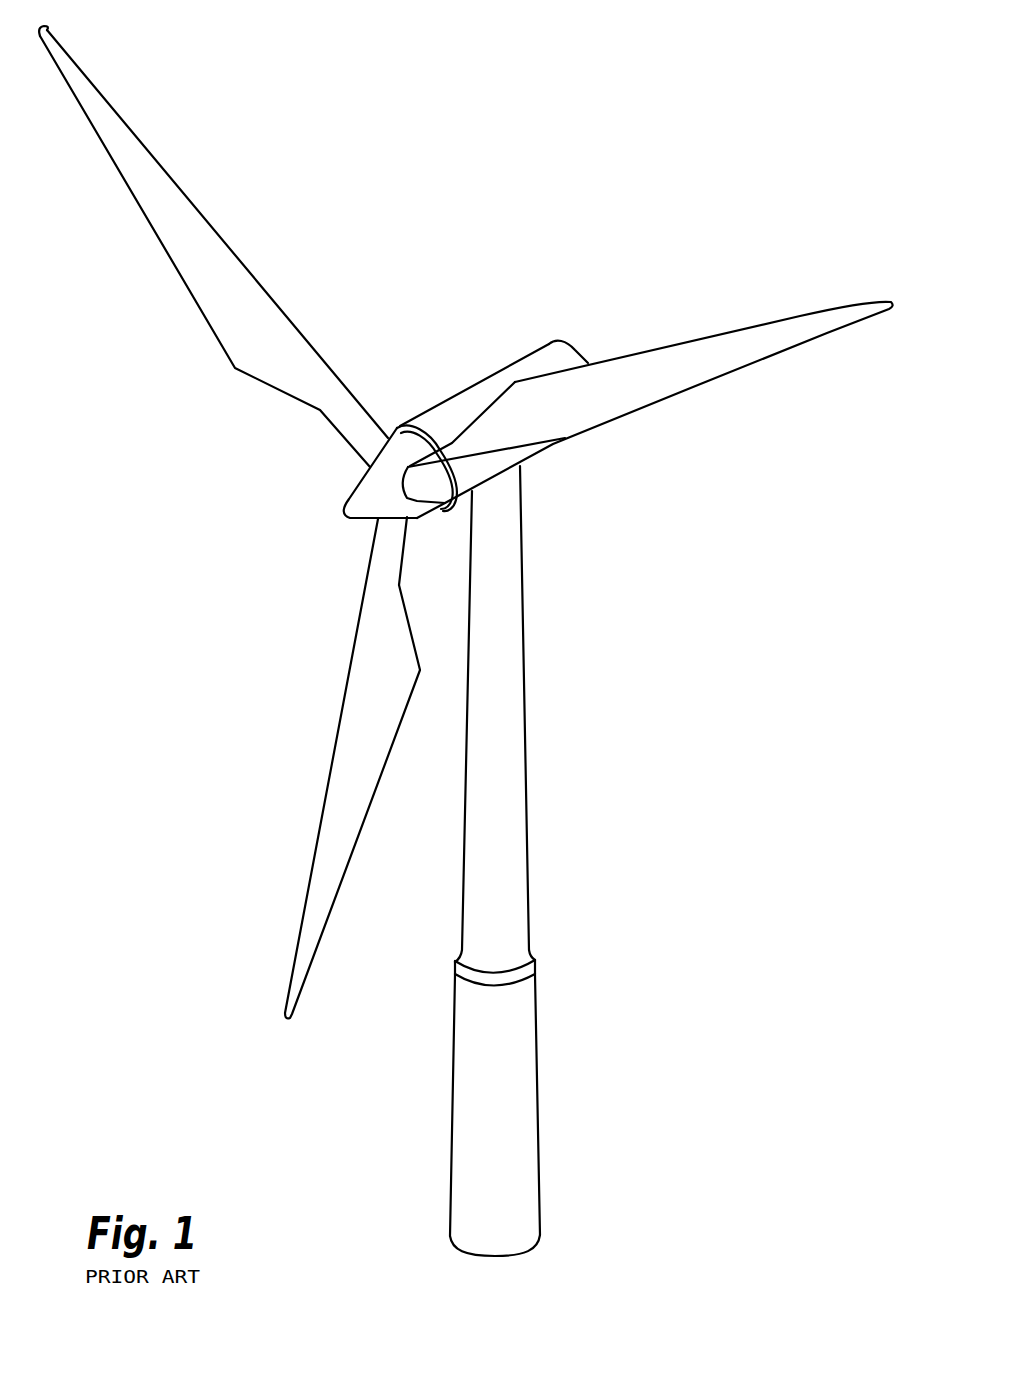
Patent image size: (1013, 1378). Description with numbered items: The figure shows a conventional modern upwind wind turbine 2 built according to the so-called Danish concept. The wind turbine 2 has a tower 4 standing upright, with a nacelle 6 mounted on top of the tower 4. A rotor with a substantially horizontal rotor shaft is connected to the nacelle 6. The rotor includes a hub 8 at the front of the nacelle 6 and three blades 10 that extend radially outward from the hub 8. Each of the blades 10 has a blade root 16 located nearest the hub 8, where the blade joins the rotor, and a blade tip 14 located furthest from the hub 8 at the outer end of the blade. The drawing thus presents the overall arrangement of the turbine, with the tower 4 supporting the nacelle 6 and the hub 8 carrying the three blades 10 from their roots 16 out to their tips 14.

The wind turbine 2 is at (625, 797).
The tower 4 is at (513, 715).
The nacelle 6 is at (457, 407).
The hub 8 is at (362, 493).
The blades 10 is at (247, 338).
The blade tip 14 is at (87, 90).
The blade root 16 is at (373, 448).